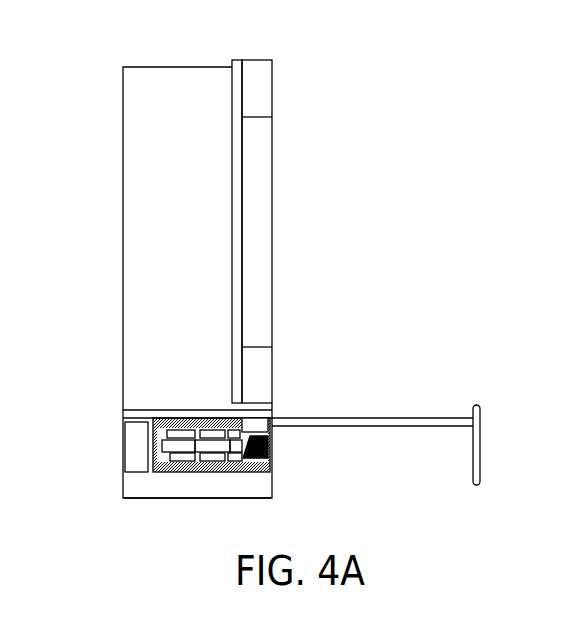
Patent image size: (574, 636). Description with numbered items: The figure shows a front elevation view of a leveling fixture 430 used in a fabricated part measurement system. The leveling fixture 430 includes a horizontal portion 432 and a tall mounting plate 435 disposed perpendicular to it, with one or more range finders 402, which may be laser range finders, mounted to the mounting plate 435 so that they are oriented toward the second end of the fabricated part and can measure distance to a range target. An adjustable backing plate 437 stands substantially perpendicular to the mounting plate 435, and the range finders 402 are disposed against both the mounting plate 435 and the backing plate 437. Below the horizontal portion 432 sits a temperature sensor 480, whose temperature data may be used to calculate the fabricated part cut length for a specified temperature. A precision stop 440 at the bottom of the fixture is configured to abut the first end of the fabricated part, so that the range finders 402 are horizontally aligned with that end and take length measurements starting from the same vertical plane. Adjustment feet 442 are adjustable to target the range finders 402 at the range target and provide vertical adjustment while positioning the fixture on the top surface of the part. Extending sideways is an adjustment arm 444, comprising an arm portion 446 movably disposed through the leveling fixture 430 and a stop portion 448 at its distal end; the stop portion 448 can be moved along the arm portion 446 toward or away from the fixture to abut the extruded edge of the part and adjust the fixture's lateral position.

The leveling fixture 430 is at (418, 184).
The range finder 402 is at (254, 95).
The mounting plate 435 is at (232, 133).
The adjustable backing plate 437 is at (132, 247).
The horizontal portion 432 is at (160, 412).
The temperature sensor 480 is at (134, 444).
The precision stop 440 is at (184, 487).
The adjustment feet 442 is at (252, 485).
The adjustment arm 444 is at (438, 372).
The arm portion 446 is at (356, 427).
The stop portion 448 is at (471, 465).